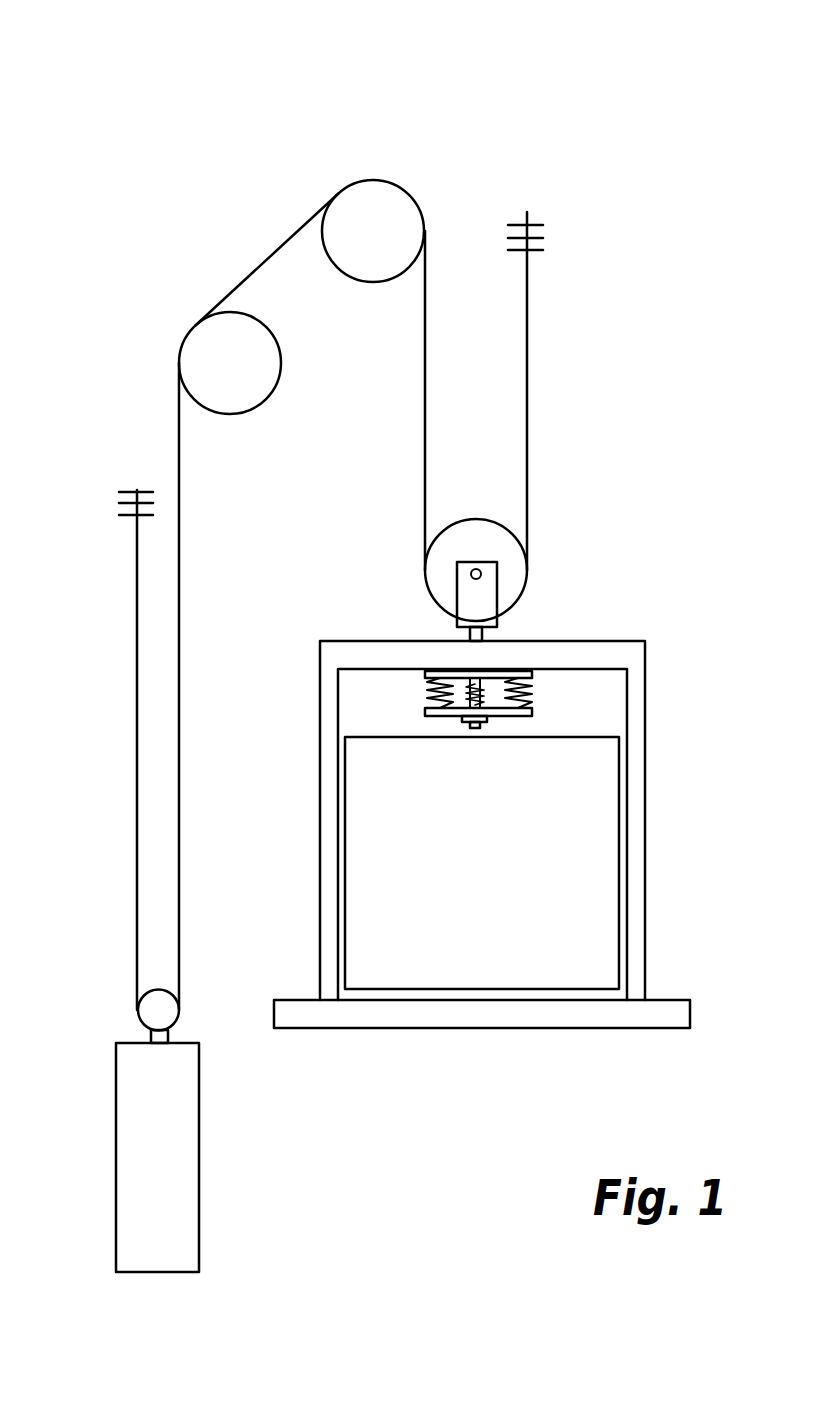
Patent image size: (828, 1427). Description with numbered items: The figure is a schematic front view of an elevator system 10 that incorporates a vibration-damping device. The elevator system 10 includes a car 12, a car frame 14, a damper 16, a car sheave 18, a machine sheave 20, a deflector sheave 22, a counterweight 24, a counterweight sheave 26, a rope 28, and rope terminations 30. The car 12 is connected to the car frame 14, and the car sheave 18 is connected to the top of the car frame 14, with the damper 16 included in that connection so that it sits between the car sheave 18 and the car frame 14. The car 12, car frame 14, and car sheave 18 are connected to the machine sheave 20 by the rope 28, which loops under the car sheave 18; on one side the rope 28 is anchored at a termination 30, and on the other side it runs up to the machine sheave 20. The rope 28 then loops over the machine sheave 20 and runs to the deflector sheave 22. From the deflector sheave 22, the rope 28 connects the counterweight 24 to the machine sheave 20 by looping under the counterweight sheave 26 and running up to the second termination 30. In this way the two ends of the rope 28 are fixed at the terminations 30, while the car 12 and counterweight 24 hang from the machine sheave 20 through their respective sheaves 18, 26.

The elevator system 10 is at (362, 108).
The car 12 is at (590, 870).
The car frame 14 is at (643, 690).
The damper 16 is at (530, 688).
The car sheave 18 is at (503, 524).
The machine sheave 20 is at (379, 182).
The deflector sheave 22 is at (188, 345).
The counterweight 24 is at (116, 1153).
The counterweight sheave 26 is at (166, 1012).
The rope 28 is at (526, 345).
The rope terminations 30 is at (137, 490).